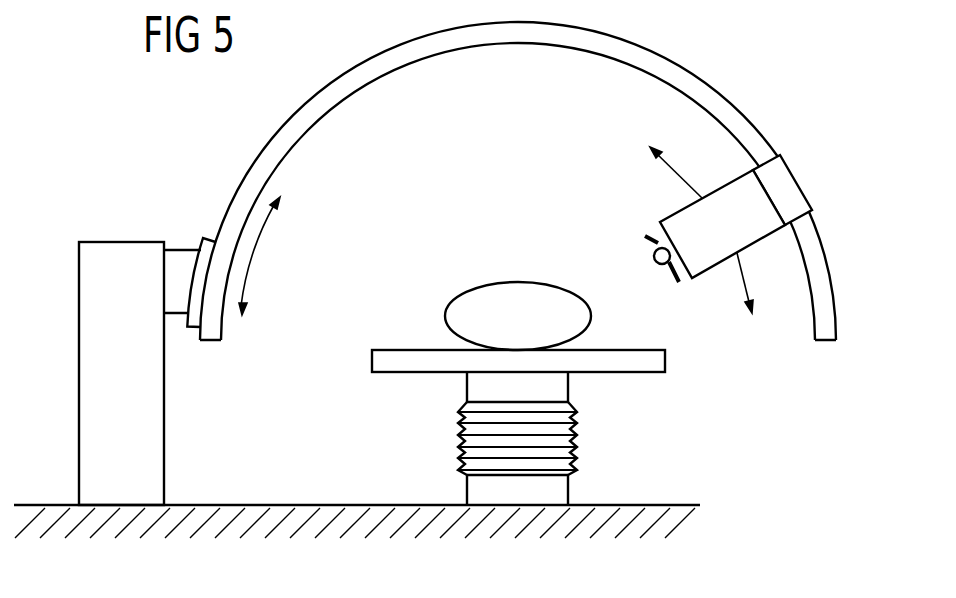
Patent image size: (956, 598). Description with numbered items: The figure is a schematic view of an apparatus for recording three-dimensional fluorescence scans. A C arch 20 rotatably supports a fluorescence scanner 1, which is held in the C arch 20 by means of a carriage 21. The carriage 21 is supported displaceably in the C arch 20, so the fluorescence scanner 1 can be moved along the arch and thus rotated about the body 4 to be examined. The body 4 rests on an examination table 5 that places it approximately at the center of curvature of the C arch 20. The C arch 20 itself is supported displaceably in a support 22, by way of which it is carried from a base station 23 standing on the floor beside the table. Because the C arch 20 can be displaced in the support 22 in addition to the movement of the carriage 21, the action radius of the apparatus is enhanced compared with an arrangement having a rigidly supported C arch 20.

The fluorescence scanner 1 is at (670, 228).
The body 4 is at (493, 283).
The examination table 5 is at (372, 360).
The C arch 20 is at (827, 303).
The carriage 21 is at (789, 186).
The support 22 is at (204, 242).
The base station 23 is at (102, 331).